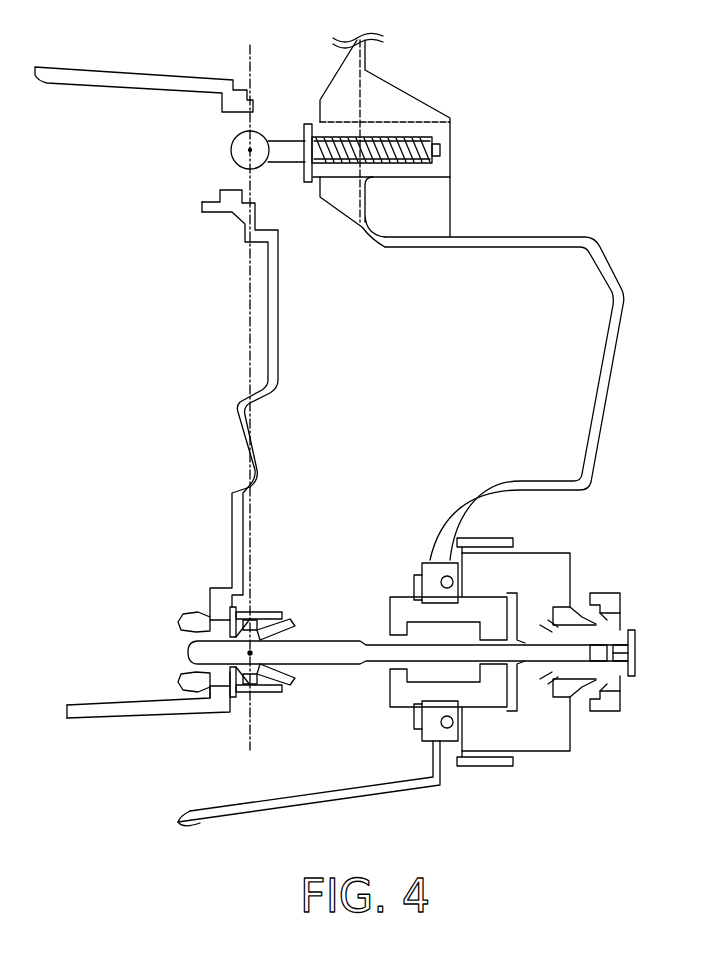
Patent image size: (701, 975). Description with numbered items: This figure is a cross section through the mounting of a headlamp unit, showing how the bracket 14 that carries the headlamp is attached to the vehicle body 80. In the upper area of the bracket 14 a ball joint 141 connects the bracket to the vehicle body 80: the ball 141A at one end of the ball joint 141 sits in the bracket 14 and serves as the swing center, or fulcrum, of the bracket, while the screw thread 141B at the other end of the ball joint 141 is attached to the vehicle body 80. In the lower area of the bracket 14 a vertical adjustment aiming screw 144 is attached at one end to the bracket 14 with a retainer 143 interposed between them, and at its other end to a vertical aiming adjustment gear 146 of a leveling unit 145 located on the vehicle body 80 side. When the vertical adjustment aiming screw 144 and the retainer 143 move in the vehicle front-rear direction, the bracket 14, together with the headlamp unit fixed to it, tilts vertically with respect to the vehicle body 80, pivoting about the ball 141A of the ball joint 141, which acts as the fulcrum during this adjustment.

The bracket 14 is at (238, 417).
The vehicle body 80 is at (623, 322).
The ball joint 141 is at (283, 137).
The ball 141A is at (245, 150).
The screw thread 141B is at (400, 166).
The retainer 143 is at (263, 696).
The vertical adjustment aiming screw 144 is at (185, 654).
The leveling unit 145 is at (535, 757).
The vertical aiming adjustment gear 146 is at (608, 712).